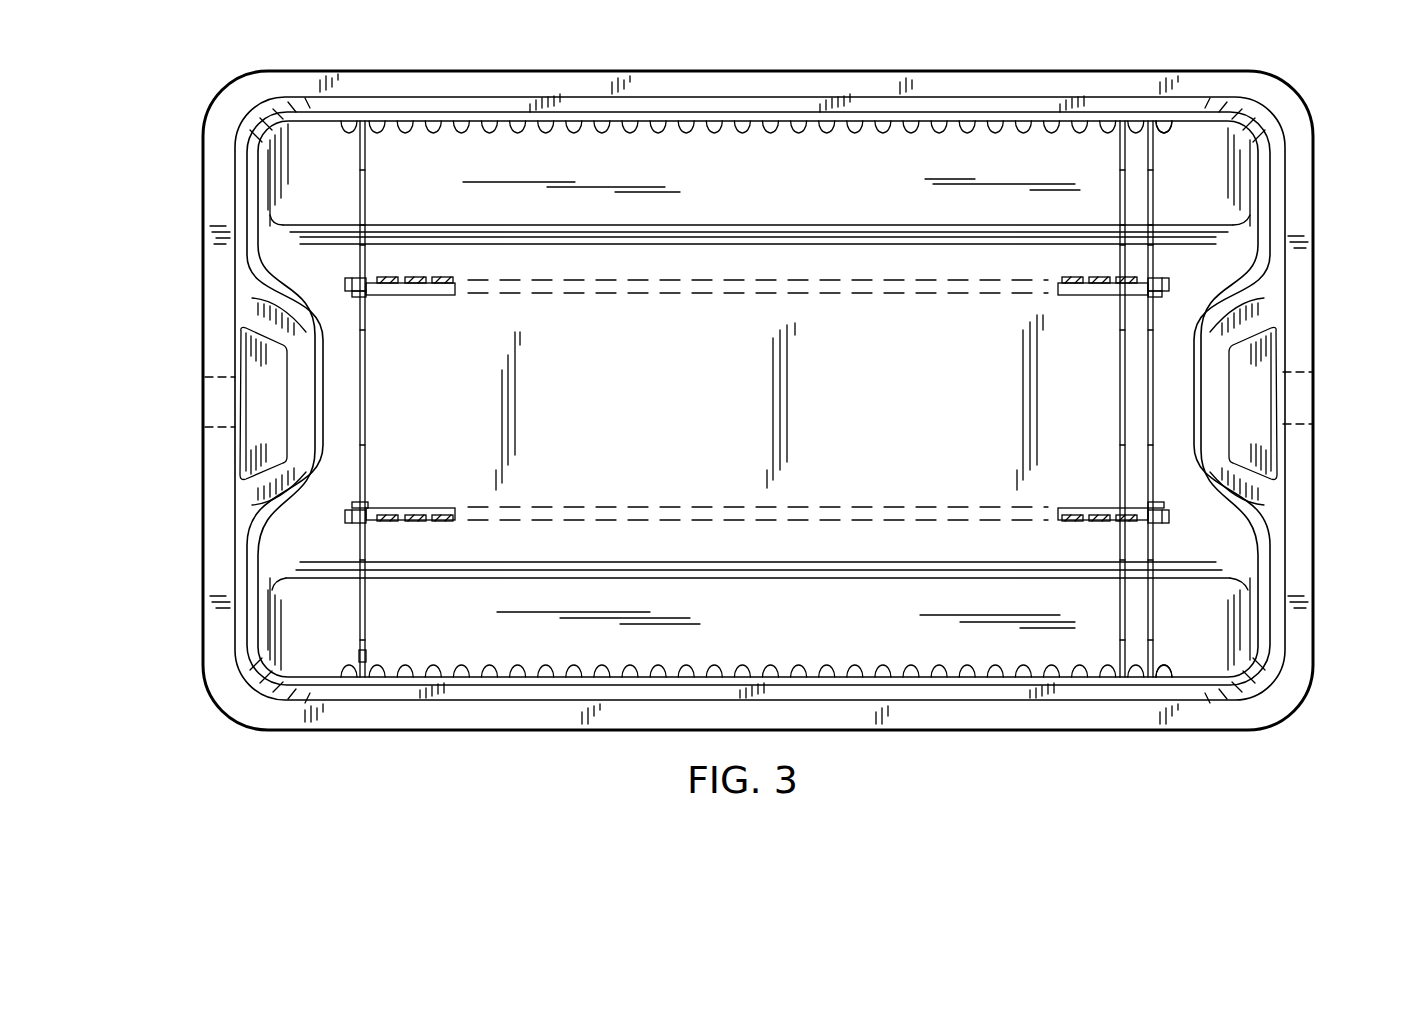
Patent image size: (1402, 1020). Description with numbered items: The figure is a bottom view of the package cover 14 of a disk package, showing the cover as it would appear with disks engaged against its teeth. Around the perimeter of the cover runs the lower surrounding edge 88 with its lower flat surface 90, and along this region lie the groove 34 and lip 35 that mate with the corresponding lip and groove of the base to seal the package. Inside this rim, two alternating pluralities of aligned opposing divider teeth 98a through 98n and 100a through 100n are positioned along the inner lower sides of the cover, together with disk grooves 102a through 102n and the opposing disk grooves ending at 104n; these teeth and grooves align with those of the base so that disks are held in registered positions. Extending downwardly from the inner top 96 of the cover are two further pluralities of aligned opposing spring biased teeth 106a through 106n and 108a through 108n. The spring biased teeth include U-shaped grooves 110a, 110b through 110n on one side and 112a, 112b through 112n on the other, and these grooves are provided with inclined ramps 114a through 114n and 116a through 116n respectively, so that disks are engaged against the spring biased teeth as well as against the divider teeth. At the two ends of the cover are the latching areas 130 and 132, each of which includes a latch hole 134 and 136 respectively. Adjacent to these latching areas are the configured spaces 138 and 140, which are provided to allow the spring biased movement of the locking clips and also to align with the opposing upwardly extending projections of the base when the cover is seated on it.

The package cover 14 is at (1320, 568).
The groove 34 is at (346, 108).
The lip 35 is at (402, 118).
The lower surrounding edge 88 is at (645, 72).
The lower flat surface 90 is at (514, 83).
The inner top 96 is at (665, 416).
The divider tooth 98a is at (349, 132).
The divider tooth 98n is at (1168, 128).
The divider tooth 100a is at (348, 668).
The divider tooth 100n is at (1165, 668).
The disk groove 102a is at (368, 130).
The disk groove 102n is at (1156, 130).
The disk groove 104n is at (362, 670).
The spring biased tooth 106a is at (352, 280).
The spring biased tooth 106n is at (1167, 284).
The spring biased tooth 108a is at (352, 522).
The spring biased tooth 108n is at (1165, 520).
The U groove 110a is at (367, 283).
The U groove 110b is at (397, 283).
The U groove 110n is at (1157, 280).
The U groove 112a is at (366, 521).
The U groove 112b is at (395, 520).
The U groove 112n is at (1155, 522).
The inclined ramp 114a is at (353, 294).
The inclined ramp 114n is at (1157, 295).
The inclined ramp 116a is at (356, 506).
The inclined ramp 116n is at (1158, 506).
The latching area 130 is at (198, 401).
The latching area 132 is at (1305, 401).
The latch hole 134 is at (230, 428).
The latch hole 136 is at (1296, 420).
The configured space 138 is at (277, 416).
The configured space 140 is at (1268, 416).